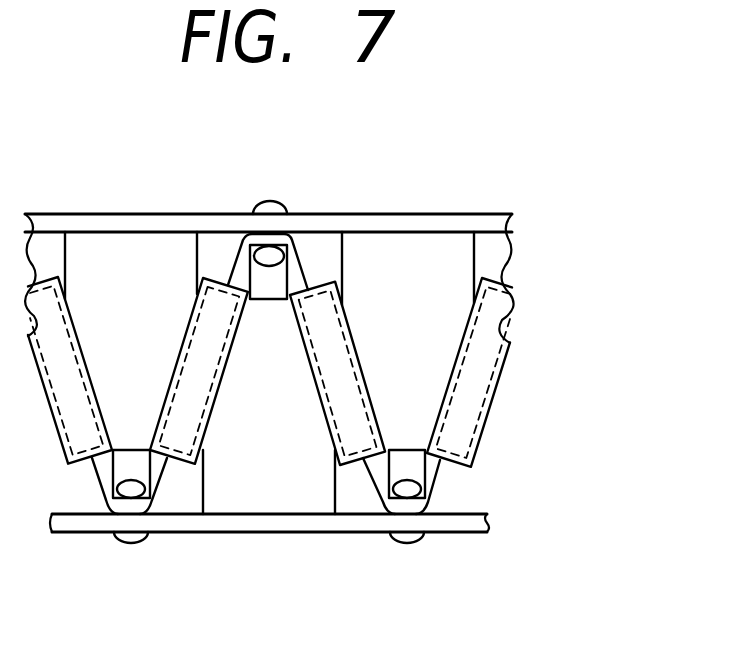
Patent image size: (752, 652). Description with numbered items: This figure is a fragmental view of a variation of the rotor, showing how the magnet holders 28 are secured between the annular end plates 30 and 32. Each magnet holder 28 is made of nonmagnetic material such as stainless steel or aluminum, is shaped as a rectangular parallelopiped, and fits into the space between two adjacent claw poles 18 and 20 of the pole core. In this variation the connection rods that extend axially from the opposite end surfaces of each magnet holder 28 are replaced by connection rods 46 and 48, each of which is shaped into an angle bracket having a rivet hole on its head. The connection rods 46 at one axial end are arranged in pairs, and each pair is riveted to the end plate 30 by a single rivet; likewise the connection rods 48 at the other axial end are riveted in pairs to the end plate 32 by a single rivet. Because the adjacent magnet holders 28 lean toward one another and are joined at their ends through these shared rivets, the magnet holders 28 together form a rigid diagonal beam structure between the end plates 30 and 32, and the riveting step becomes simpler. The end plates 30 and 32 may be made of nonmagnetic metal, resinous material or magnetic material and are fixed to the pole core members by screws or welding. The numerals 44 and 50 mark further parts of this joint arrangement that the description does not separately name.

The claw pole 18 is at (447, 270).
The claw pole 20 is at (282, 493).
The magnet holder 28 is at (477, 397).
The annular end plate 30 is at (437, 225).
The annular end plate 32 is at (468, 524).
The spring end portion 44 is at (372, 457).
The connection rod 46 is at (300, 262).
The connection rod 48 is at (385, 470).
The pivot stud 50 is at (272, 200).